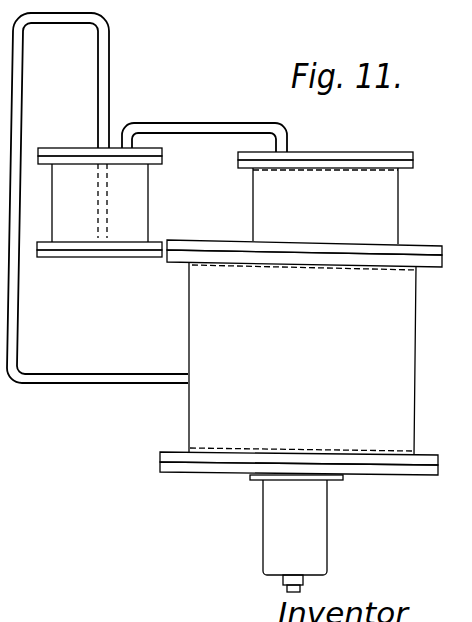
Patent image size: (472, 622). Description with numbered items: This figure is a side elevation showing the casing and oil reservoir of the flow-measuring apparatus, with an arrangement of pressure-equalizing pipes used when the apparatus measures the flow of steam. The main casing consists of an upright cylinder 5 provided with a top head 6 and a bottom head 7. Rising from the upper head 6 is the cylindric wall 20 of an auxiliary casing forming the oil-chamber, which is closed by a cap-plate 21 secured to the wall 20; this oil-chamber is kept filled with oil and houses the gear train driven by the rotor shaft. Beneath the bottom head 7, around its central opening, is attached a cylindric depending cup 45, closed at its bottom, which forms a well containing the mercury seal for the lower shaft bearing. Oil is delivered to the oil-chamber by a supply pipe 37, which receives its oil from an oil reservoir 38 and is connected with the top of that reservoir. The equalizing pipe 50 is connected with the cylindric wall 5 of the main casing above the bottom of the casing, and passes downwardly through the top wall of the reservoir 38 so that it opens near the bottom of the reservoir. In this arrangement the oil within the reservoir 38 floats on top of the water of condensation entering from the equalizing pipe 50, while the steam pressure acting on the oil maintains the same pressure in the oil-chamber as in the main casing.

The upright cylinder 5 is at (198, 302).
The top head 6 is at (406, 250).
The bottom head 7 is at (210, 467).
The cylindric wall 20 is at (325, 206).
The cap-plate 21 is at (383, 151).
The supply pipe 37 is at (193, 126).
The oil reservoir 38 is at (138, 195).
The cup 45 is at (317, 527).
The equalizing pipe 50 is at (12, 281).